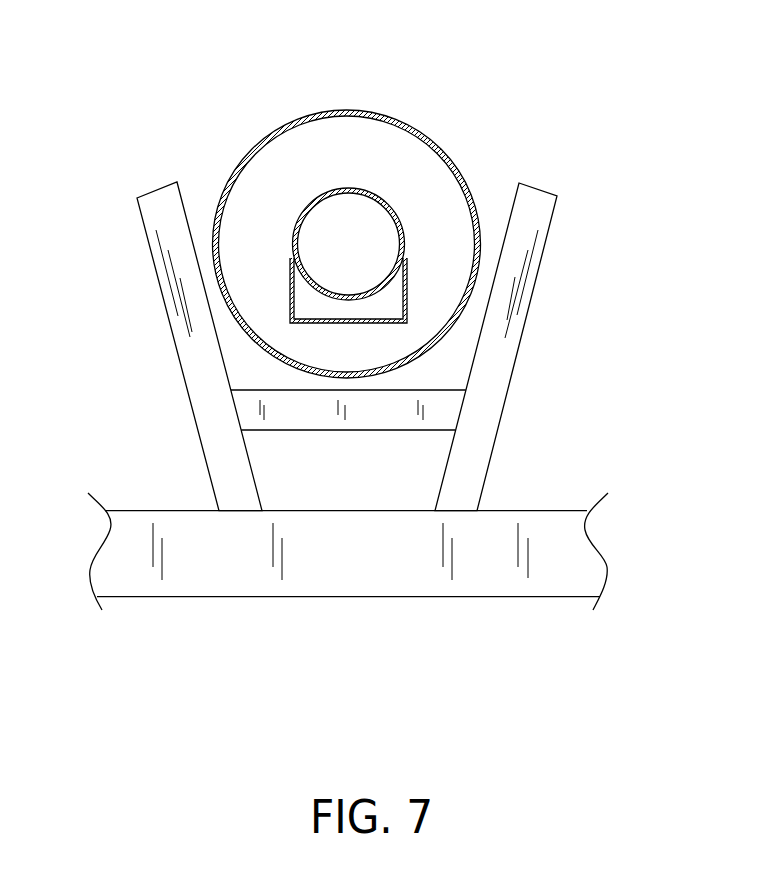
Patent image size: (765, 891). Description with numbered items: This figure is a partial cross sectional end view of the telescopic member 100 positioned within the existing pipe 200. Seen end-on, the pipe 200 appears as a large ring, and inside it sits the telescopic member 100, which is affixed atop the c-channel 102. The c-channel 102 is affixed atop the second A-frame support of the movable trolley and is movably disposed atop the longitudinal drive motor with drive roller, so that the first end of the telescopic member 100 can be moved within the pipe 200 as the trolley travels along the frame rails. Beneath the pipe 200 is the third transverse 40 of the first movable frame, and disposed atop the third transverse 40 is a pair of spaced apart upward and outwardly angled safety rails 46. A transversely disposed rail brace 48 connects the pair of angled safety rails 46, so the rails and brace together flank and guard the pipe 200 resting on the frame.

The third transverse 40 is at (550, 510).
The angled safety rails 46 is at (135, 197).
The rail brace 48 is at (547, 194).
The telescopic member 100 is at (318, 189).
The c-channel 102 is at (408, 284).
The existing pipe 200 is at (338, 111).